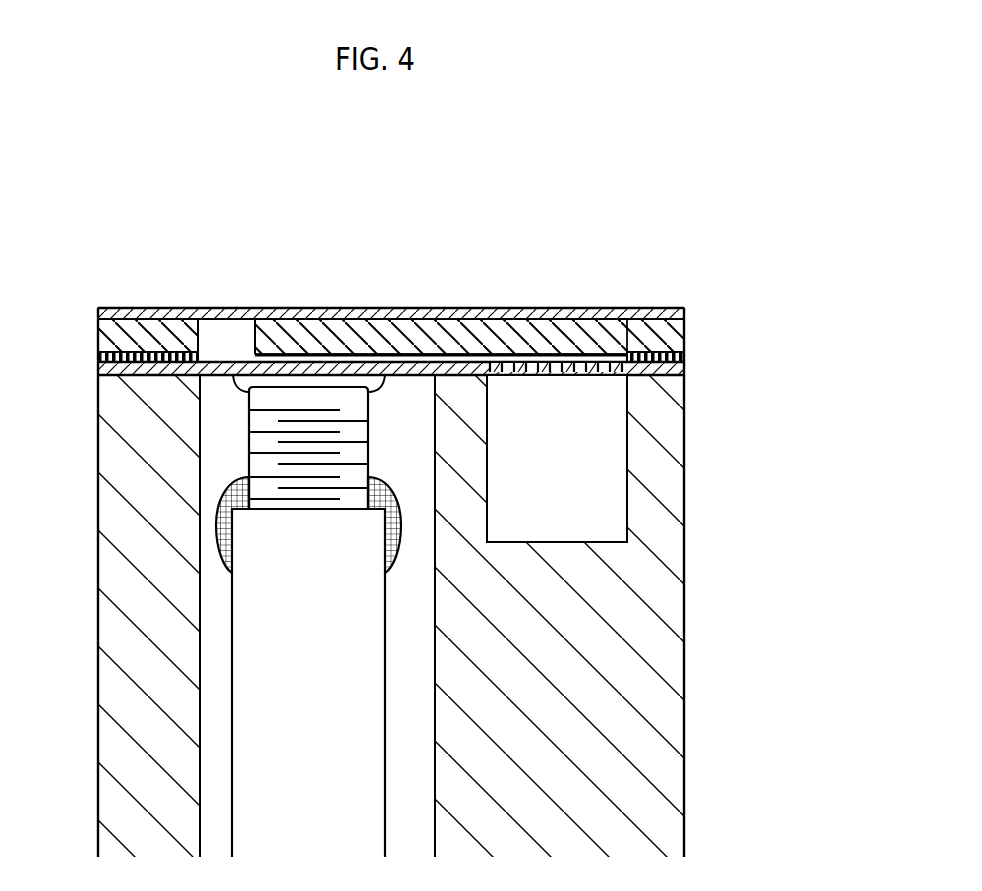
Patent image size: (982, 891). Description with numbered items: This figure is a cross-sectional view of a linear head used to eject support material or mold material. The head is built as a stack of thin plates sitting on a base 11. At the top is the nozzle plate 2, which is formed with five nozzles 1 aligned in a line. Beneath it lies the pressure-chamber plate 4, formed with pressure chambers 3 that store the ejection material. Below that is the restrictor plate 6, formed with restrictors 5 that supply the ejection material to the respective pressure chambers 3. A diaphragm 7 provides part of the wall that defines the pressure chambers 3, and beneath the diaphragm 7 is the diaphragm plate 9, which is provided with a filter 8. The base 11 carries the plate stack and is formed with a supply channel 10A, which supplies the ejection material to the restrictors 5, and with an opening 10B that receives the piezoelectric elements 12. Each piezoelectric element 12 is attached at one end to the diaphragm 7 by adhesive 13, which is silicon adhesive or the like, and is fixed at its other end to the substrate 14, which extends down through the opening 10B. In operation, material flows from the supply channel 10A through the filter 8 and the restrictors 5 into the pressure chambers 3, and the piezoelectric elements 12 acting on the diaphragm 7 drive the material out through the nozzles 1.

The nozzle 1 is at (225, 308).
The nozzle plate 2 is at (684, 308).
The pressure chamber 3 is at (233, 332).
The pressure-chamber plate 4 is at (684, 333).
The restrictor 5 is at (410, 352).
The restrictor plate 6 is at (684, 357).
The diaphragm 7 is at (300, 355).
The filter 8 is at (532, 363).
The diaphragm plate 9 is at (684, 372).
The supply channel 10A is at (618, 483).
The opening 10B is at (212, 771).
The base 11 is at (684, 641).
The piezoelectric element 12 is at (255, 448).
The adhesive 13 is at (255, 388).
The substrate 14 is at (230, 663).